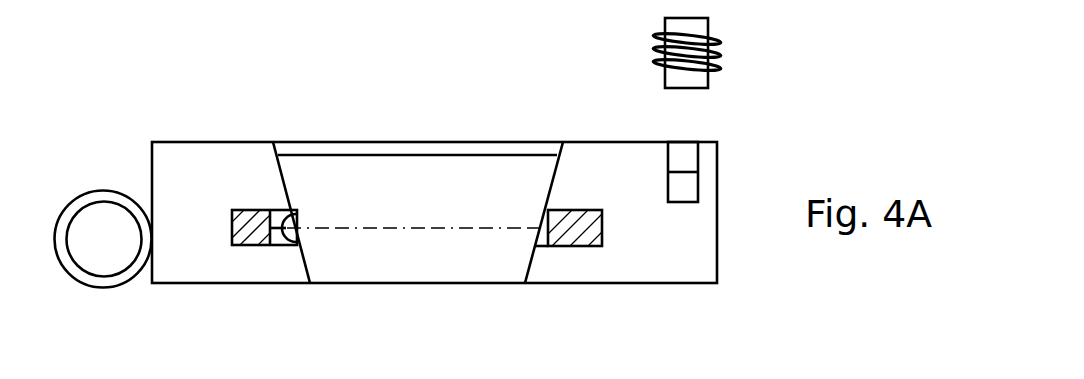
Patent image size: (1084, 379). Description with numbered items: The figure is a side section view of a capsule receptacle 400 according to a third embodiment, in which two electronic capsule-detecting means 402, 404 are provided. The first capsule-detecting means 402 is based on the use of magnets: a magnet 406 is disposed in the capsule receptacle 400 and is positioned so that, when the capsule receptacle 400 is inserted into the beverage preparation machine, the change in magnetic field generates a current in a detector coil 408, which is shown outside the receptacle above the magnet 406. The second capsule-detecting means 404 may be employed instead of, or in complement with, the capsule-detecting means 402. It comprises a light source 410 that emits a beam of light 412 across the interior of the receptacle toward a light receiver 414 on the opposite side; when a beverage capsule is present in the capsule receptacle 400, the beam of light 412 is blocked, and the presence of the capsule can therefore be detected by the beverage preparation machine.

The capsule receptacle 400 is at (811, 128).
The capsule-detecting means 402 is at (748, 27).
The capsule-detecting means 404 is at (579, 266).
The magnet 406 is at (708, 187).
The detector coil 408 is at (708, 85).
The light source 410 is at (586, 220).
The beam of light 412 is at (407, 228).
The left support block 414 is at (250, 218).